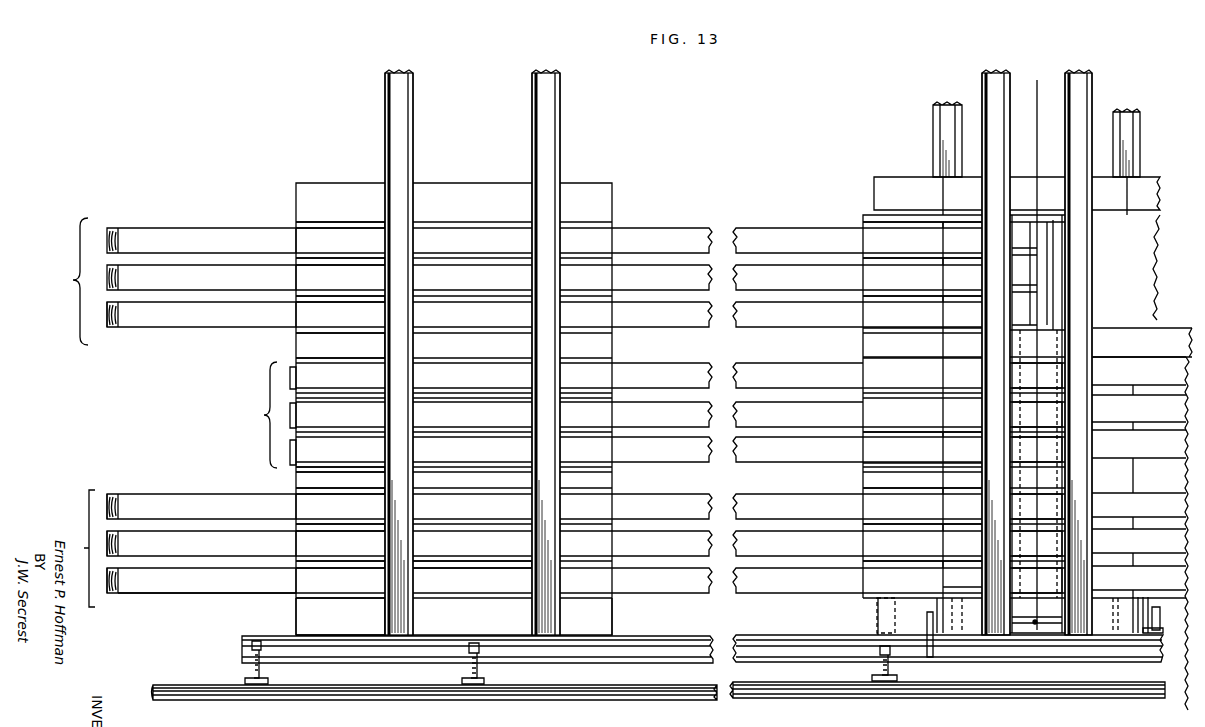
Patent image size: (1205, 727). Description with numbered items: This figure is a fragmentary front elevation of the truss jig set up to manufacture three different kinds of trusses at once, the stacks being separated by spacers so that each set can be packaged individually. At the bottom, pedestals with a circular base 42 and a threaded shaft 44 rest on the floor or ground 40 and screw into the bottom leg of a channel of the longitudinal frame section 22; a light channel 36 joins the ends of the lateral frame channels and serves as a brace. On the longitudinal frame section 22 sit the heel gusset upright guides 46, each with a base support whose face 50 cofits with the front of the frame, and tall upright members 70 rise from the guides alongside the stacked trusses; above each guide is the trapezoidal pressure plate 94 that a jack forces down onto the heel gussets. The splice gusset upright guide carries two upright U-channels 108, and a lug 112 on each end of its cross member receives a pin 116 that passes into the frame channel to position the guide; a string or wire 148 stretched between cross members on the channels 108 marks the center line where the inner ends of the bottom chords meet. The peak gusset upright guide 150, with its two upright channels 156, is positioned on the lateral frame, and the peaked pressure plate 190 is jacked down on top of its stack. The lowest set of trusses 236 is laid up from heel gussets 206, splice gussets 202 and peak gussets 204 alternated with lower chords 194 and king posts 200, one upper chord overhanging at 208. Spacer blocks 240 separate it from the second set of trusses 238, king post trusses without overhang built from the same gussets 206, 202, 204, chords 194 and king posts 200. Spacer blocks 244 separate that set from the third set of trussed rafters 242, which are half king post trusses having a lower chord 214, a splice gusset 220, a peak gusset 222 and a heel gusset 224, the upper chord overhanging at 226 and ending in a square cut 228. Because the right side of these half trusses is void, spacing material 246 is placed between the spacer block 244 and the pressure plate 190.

The longitudinal frame section 22 is at (242, 655).
The light channel 36 is at (890, 607).
The floor or ground 40 is at (574, 691).
The circular base 42 is at (486, 679).
The threaded shaft 44 is at (480, 651).
The heel gusset upright guide 46 is at (614, 617).
The face 50 is at (298, 629).
The vertical rail 70 is at (399, 117).
The pressure plate 94 is at (620, 190).
The upright guide U-channel 108 is at (1000, 626).
The lug 112 is at (926, 632).
The pin 116 is at (928, 614).
The string or wire 148 is at (1039, 80).
The peak gusset upright guide 150 is at (878, 623).
The upright standard or channel 156 is at (955, 108).
The pressure plate 190 is at (1143, 185).
The lower chord 194 is at (300, 510).
The king post 200 is at (1095, 578).
The splice gusset 202 is at (977, 466).
The peak gusset 204 is at (905, 466).
The heel gusset 206 is at (368, 448).
The overhang 208 is at (173, 593).
The lower chord 214 is at (301, 245).
The splice gusset 220 is at (974, 252).
The peak gusset 222 is at (908, 250).
The heel gusset 224 is at (371, 256).
The overhang 226 is at (198, 332).
The square cut 228 is at (110, 542).
The set of trusses 236 is at (78, 548).
The set of trusses 238 is at (259, 415).
The spacer block 240 is at (297, 480).
The set of trussed rafters 242 is at (60, 281).
The spacer block 244 is at (298, 348).
The spacing material 246 is at (1146, 235).